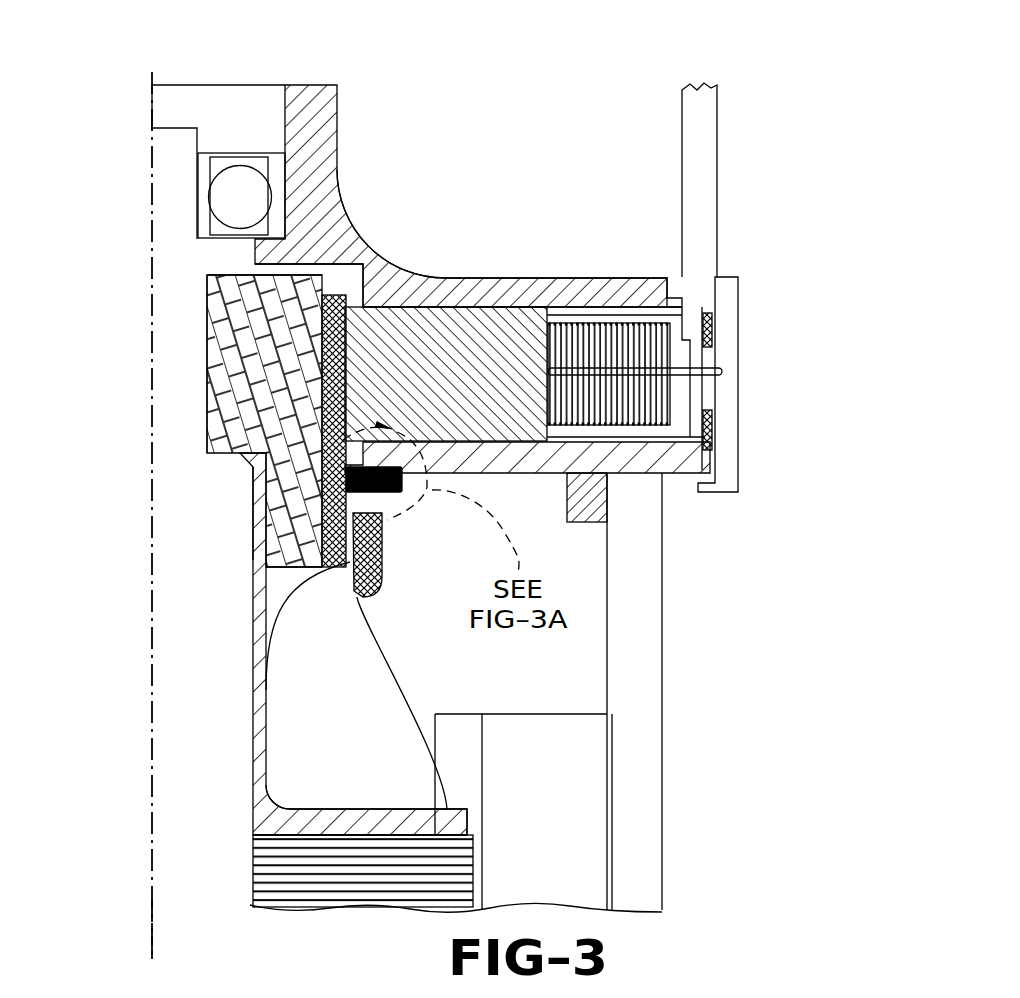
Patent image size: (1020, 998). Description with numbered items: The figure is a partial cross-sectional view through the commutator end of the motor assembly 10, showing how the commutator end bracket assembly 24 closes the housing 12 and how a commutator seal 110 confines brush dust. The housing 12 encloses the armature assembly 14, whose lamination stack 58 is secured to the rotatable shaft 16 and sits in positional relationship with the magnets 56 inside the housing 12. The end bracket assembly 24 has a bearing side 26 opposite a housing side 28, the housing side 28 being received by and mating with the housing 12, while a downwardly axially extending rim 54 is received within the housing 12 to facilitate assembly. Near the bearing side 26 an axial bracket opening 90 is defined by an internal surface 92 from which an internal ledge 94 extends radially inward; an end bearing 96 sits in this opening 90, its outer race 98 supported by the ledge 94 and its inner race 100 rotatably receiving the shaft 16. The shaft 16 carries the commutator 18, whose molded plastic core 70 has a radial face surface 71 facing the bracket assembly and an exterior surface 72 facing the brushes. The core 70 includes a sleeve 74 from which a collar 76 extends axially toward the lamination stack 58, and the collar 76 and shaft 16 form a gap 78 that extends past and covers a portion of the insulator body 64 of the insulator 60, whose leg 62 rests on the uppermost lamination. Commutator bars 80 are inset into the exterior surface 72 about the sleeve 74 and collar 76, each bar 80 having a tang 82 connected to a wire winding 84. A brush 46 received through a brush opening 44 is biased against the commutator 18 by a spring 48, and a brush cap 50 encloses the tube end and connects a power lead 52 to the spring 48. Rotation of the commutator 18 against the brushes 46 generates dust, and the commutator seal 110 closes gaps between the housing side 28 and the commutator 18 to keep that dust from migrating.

The motor assembly 10 is at (803, 98).
The housing 12 is at (638, 797).
The armature assembly 14 is at (170, 930).
The rotatable shaft 16 is at (185, 690).
The commutator 18 is at (182, 329).
The commutator end bracket assembly 24 is at (423, 237).
The bearing side 26 is at (620, 275).
The housing side 28 is at (670, 477).
The brush opening 44 is at (656, 313).
The brush 46 is at (478, 340).
The spring 48 is at (637, 413).
The brush cap 50 is at (728, 353).
The power lead 52 is at (700, 183).
The rim 54 is at (587, 523).
The magnet 56 is at (528, 795).
The lamination stack 58 is at (315, 872).
The insulator 60 is at (263, 798).
The leg 62 is at (345, 823).
The body 64 is at (253, 716).
The core 70 is at (233, 413).
The radial face surface 71 is at (205, 272).
The exterior surface 72 is at (363, 267).
The sleeve 74 is at (207, 297).
The collar 76 is at (290, 562).
The gap 78 is at (258, 500).
The commutator bar 80 is at (330, 407).
The tang 82 is at (373, 597).
The wire winding 84 is at (308, 712).
The axial bracket opening 90 is at (157, 74).
The internal surface 92 is at (285, 125).
The internal ledge 94 is at (343, 193).
The end bearing 96 is at (228, 188).
The outer race 98 is at (275, 165).
The inner race 100 is at (212, 222).
The commutator seal 110 is at (401, 524).